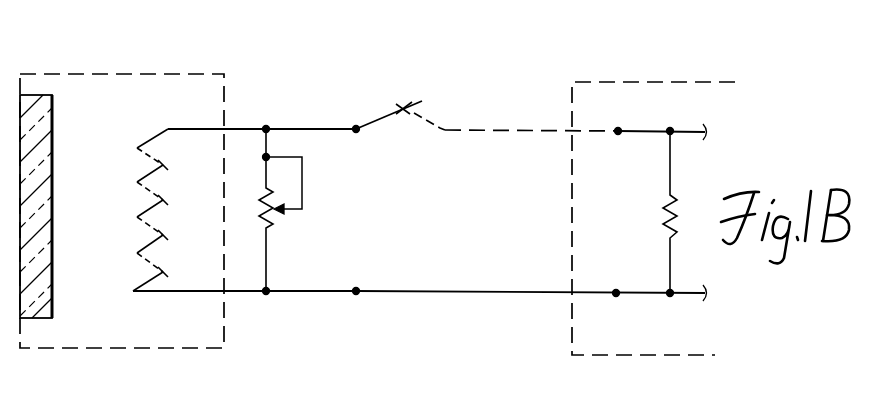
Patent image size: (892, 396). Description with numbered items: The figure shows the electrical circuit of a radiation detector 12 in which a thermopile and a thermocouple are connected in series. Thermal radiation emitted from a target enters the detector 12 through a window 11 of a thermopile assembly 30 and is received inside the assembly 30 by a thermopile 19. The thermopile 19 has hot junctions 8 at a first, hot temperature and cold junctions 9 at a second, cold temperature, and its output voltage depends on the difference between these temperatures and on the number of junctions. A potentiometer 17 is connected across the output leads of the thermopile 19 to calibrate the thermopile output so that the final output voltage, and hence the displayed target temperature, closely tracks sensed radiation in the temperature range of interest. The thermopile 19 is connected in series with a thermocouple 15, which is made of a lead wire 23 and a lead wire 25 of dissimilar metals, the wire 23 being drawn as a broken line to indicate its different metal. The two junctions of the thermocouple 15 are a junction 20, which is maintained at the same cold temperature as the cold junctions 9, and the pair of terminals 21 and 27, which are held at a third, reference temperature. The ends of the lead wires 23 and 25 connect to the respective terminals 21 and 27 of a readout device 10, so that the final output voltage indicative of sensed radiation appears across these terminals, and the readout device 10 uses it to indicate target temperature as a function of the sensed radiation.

The hot junctions 8 is at (133, 140).
The cold junctions 9 is at (172, 152).
The readout device 10 is at (640, 355).
The window 11 is at (53, 287).
The radiation detector 12 is at (313, 81).
The thermocouple 15 is at (612, 300).
The potentiometer 17 is at (303, 210).
The thermopile 19 is at (153, 292).
The junction 20 is at (405, 100).
The terminal 21 is at (618, 135).
The lead wire 23 is at (504, 128).
The lead wire 25 is at (485, 290).
The terminal 27 is at (613, 286).
The thermopile assembly 30 is at (118, 348).